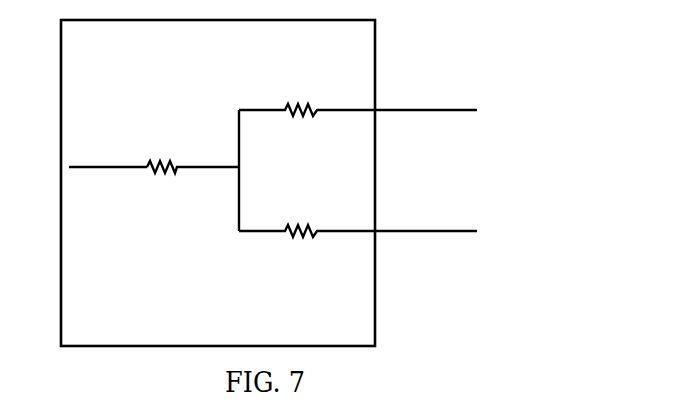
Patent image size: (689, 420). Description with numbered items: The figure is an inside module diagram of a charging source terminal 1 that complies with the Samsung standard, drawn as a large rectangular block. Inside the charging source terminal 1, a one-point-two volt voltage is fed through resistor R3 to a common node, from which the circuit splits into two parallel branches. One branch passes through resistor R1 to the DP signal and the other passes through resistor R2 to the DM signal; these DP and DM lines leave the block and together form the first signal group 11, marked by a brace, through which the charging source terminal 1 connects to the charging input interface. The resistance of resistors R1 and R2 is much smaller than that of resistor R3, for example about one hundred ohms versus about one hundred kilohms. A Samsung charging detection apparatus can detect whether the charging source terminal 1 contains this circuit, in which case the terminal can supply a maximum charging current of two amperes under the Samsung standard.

The charging source terminal 1 is at (218, 183).
The first signal group 11 is at (498, 109).
The resistor R1 is at (307, 97).
The resistor R2 is at (307, 216).
The resistor R3 is at (154, 154).